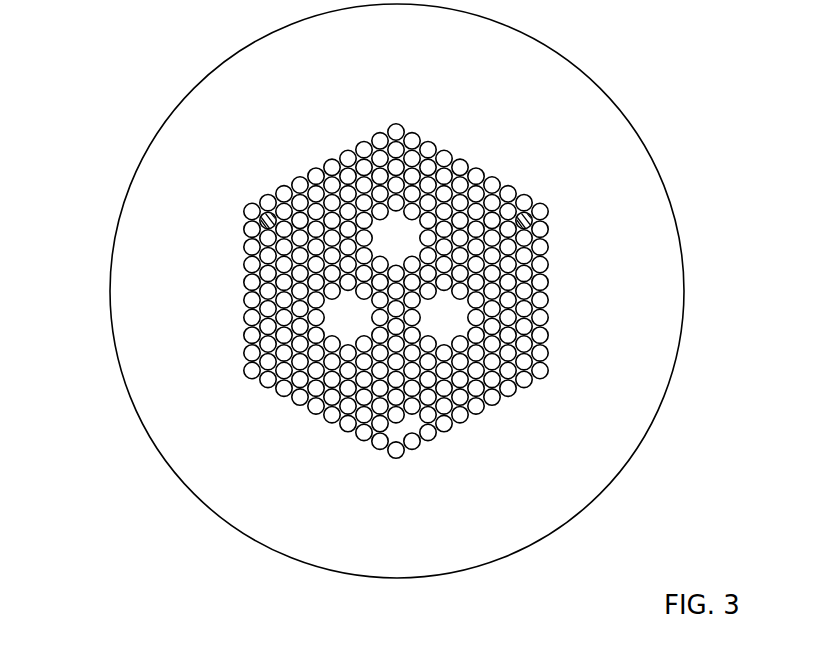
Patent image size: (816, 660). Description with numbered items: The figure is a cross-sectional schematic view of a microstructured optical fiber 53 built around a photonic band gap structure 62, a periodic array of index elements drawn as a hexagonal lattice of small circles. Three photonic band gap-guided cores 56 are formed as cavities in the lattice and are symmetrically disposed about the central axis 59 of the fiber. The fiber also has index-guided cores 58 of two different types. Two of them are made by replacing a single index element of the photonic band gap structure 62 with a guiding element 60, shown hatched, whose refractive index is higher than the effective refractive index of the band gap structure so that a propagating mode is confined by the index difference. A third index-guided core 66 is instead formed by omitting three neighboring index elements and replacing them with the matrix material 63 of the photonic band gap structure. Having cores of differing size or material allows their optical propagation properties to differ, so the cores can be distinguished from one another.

The fuel bundle assembly 53 is at (150, 75).
The photonic band gap-guided cores 56 is at (265, 383).
The index-guided cores 58 is at (250, 235).
The central axis 59 is at (400, 291).
The guiding element 60 is at (258, 215).
The photonic band gap structure 62 is at (541, 394).
The matrix material 63 is at (600, 353).
The index-guided core 66 is at (400, 425).